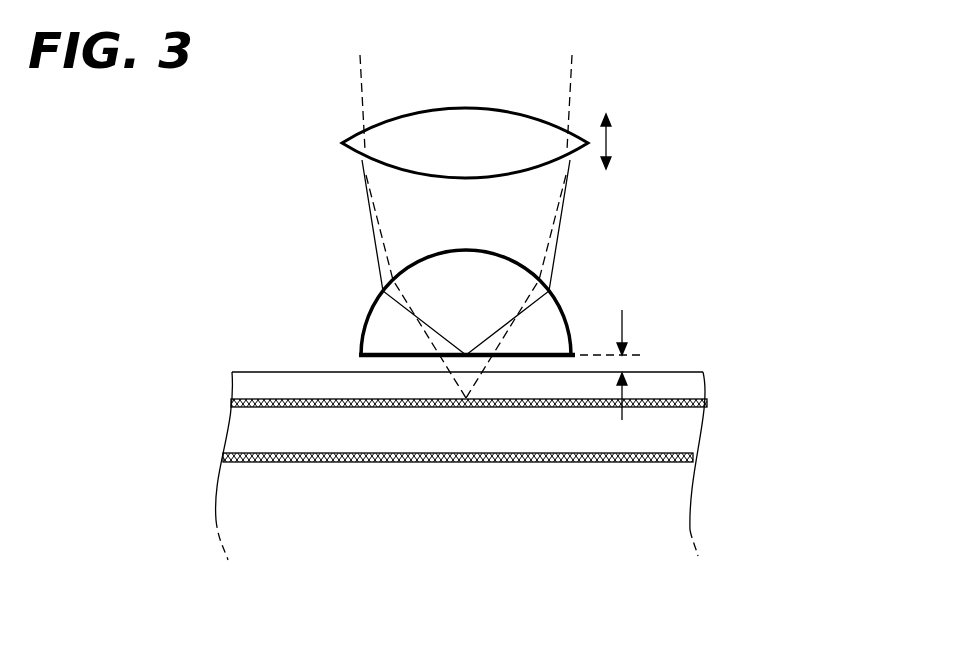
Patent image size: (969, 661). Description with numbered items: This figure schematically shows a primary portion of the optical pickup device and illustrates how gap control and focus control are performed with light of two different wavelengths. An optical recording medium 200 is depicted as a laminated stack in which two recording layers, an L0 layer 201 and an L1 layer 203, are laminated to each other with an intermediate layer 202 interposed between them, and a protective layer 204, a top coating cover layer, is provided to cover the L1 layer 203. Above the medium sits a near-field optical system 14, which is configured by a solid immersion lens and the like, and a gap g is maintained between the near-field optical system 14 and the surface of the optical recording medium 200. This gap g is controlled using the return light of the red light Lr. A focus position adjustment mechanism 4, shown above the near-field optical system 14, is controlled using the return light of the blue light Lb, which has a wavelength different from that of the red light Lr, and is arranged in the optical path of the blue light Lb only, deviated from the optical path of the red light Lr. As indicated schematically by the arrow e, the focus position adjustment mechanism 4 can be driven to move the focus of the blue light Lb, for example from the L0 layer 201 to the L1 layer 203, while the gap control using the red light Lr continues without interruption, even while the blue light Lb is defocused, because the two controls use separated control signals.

The focus position adjustment mechanism 4 is at (362, 130).
The near-field optical system 14 is at (558, 297).
The optical recording medium 200 is at (468, 433).
The L0 layer 201 is at (665, 455).
The intermediate layer 202 is at (245, 428).
The L1 layer 203 is at (665, 399).
The protective layer 204 is at (245, 384).
The blue light Lb is at (372, 183).
The red light Lr is at (368, 238).
The arrow e is at (612, 140).
The gap g is at (622, 339).